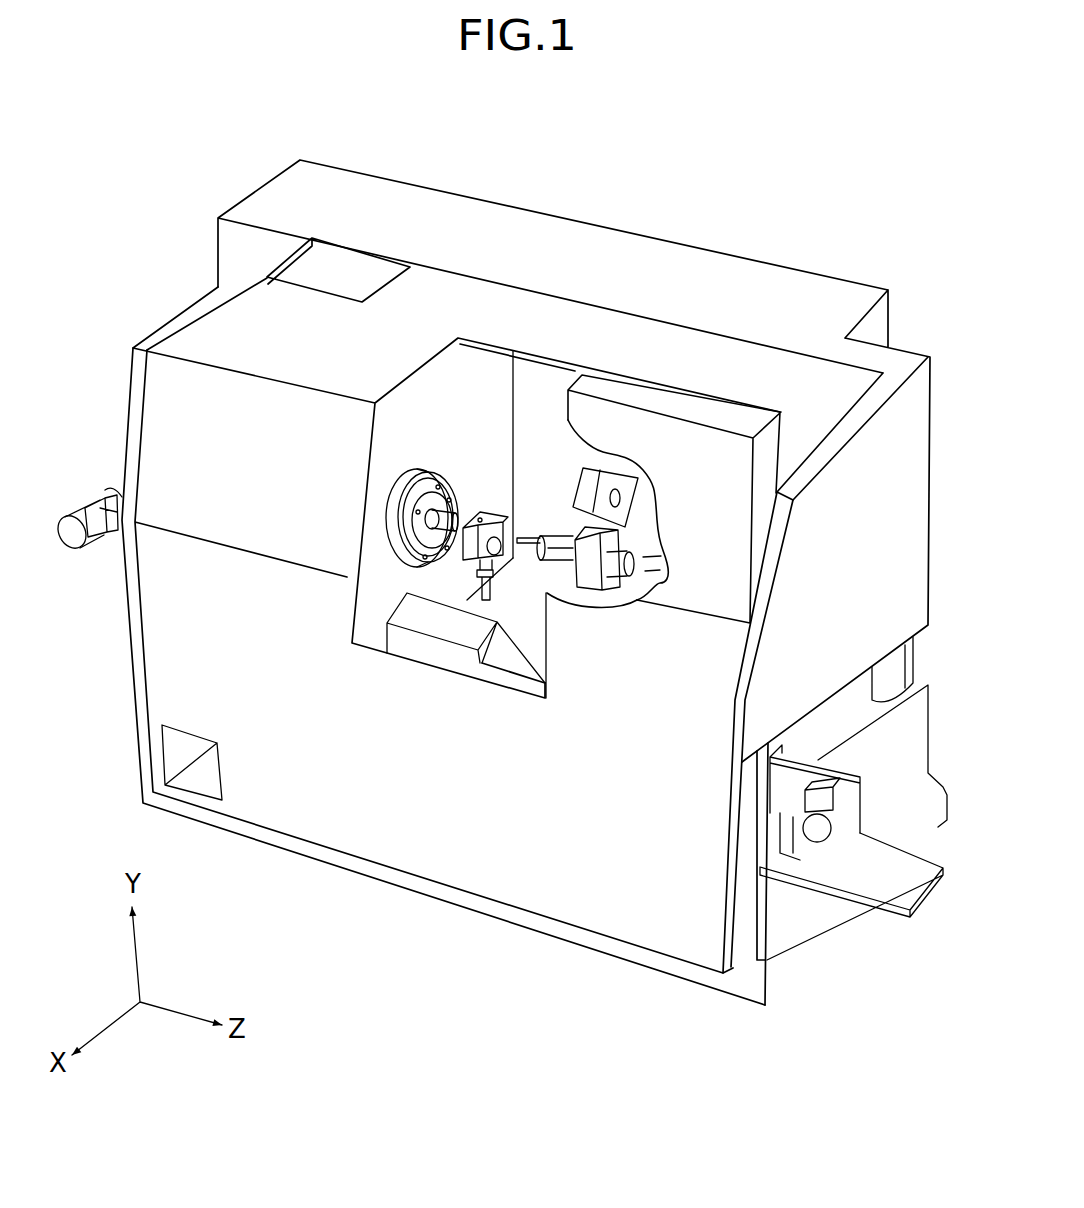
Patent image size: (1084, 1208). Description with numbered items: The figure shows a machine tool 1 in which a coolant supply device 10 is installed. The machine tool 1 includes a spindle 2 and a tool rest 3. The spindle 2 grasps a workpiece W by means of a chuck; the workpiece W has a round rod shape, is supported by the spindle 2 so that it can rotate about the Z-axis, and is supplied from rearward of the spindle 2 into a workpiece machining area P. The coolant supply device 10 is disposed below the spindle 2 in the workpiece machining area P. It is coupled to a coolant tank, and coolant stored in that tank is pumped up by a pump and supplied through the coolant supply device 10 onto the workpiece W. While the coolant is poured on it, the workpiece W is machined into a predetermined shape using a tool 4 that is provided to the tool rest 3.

The machine tool 1 is at (822, 228).
The spindle 2 is at (447, 440).
The tool rest 3 is at (623, 467).
The tool 4 is at (558, 565).
The coolant supply device 10 is at (467, 575).
The workpiece machining area P is at (500, 390).
The workpiece W is at (412, 567).